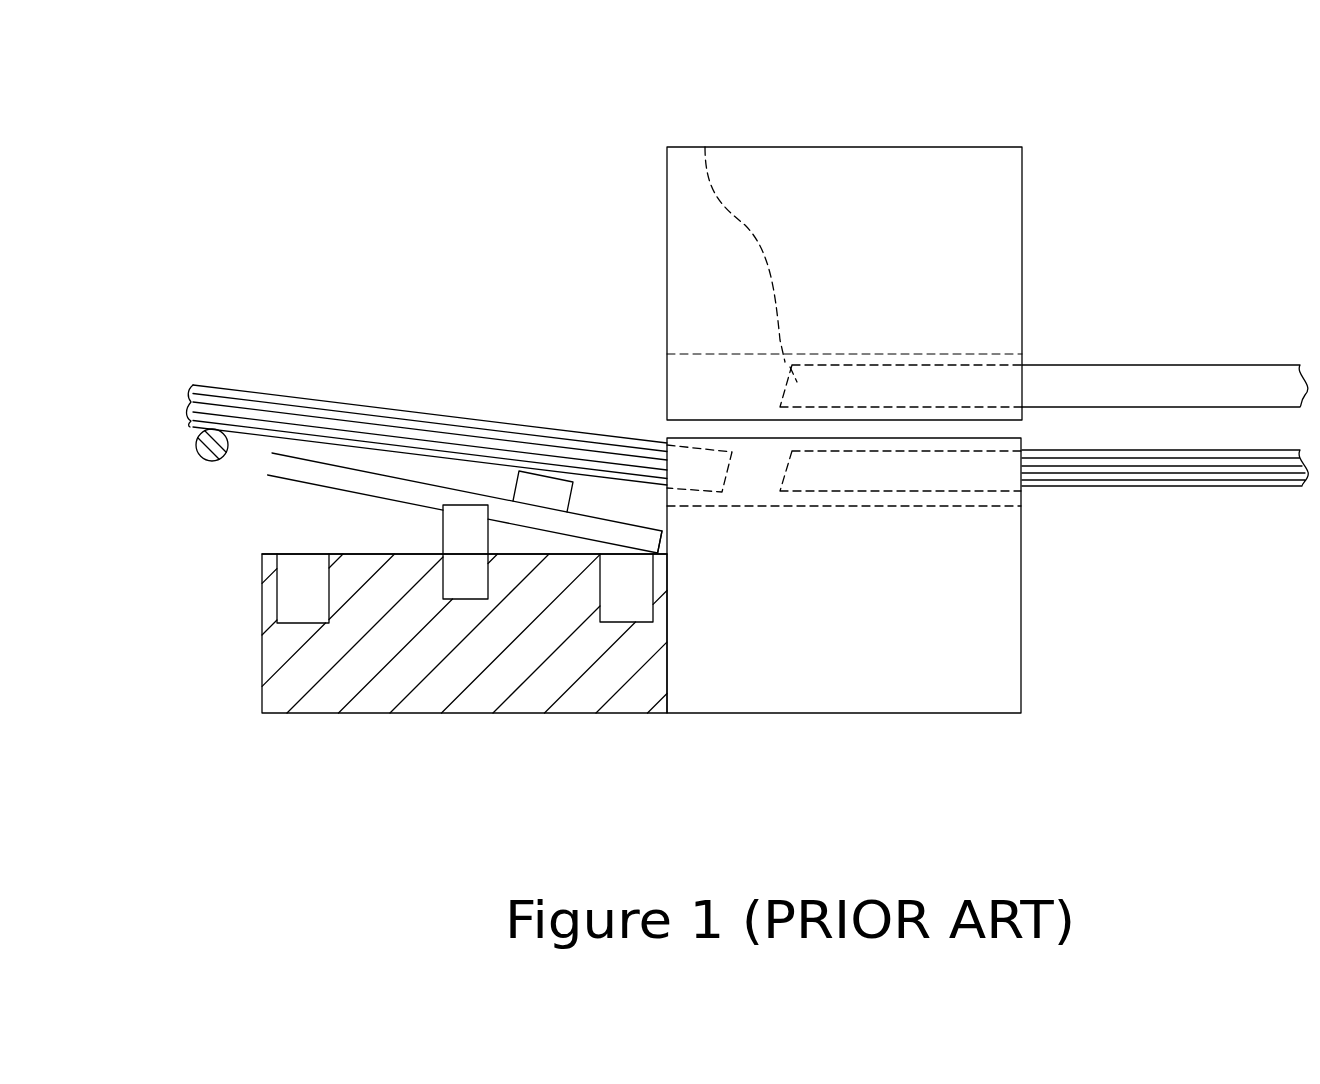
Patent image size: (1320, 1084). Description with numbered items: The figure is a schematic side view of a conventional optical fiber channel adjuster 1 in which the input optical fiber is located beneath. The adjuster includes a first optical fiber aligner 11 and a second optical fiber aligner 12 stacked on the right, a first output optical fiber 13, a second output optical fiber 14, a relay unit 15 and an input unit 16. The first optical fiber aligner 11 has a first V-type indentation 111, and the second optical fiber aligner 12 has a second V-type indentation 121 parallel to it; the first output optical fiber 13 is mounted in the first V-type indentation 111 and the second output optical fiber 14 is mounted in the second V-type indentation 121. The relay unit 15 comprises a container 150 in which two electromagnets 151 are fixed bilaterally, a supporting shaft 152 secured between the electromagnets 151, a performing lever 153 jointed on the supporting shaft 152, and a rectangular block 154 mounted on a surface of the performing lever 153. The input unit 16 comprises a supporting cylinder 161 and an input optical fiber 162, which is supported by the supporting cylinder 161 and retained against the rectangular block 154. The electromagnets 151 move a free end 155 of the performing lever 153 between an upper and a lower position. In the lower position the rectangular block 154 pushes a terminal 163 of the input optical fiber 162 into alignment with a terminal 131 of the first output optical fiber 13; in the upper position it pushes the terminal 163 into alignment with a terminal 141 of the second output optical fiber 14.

The optical fiber channel adjuster 1 is at (1168, 185).
The first optical fiber aligner 11 is at (1000, 665).
The first V-type indentation 111 is at (988, 506).
The second optical fiber aligner 12 is at (990, 226).
The second V-type indentation 121 is at (980, 354).
The first output optical fiber 13 is at (1213, 486).
The terminal of the first output optical fiber 131 is at (788, 468).
The second output optical fiber 14 is at (1235, 380).
The terminal of the second output optical fiber 141 is at (705, 147).
The relay unit 15 is at (262, 696).
The container 150 is at (262, 567).
The electromagnets 151 is at (291, 599).
The supporting shaft 152 is at (470, 599).
The performing lever 153 is at (415, 497).
The rectangular block 154 is at (545, 483).
The free end 155 is at (625, 531).
The input unit 16 is at (387, 371).
The supporting cylinder 161 is at (200, 451).
The input optical fiber 162 is at (272, 404).
The terminal of the input optical fiber 163 is at (698, 462).